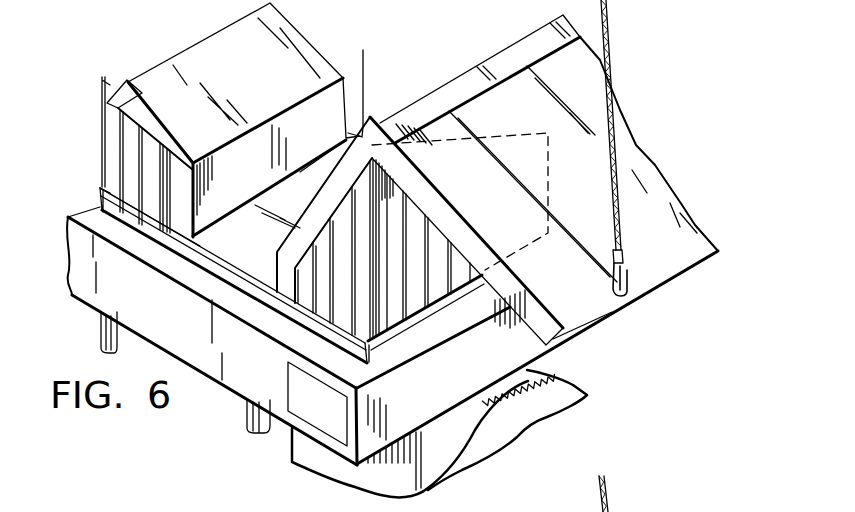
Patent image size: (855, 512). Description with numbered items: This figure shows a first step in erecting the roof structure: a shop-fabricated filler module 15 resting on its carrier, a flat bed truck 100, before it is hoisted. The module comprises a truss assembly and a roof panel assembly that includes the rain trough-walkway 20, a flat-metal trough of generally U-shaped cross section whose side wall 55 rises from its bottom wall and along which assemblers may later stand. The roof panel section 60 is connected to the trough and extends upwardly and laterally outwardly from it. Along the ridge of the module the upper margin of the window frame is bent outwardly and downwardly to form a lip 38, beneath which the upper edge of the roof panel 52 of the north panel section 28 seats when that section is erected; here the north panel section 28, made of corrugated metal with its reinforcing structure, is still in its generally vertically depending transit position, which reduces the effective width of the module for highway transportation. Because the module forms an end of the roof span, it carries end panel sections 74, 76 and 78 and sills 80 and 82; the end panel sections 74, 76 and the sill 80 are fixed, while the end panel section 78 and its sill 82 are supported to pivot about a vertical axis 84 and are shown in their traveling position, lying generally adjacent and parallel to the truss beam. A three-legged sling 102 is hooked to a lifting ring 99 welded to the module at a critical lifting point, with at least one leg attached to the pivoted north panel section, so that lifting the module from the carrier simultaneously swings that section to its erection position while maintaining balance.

The filler module 15 is at (393, 39).
The rain trough-walkway 20 is at (324, 148).
The north panel section 28 is at (676, 240).
The lip 38 is at (503, 63).
The roof panel 52 is at (642, 276).
The side wall 55 is at (290, 135).
The roof panel section 60 is at (207, 55).
The end panel section 74 is at (132, 163).
The end panel section 76 is at (318, 289).
The end panel section 78 is at (422, 303).
The sill 80 is at (108, 204).
The sill 82 is at (482, 293).
The vertical axis 84 is at (366, 106).
The lifting ring 99 is at (613, 289).
The truck 100 is at (97, 296).
The sling 102 is at (606, 21).